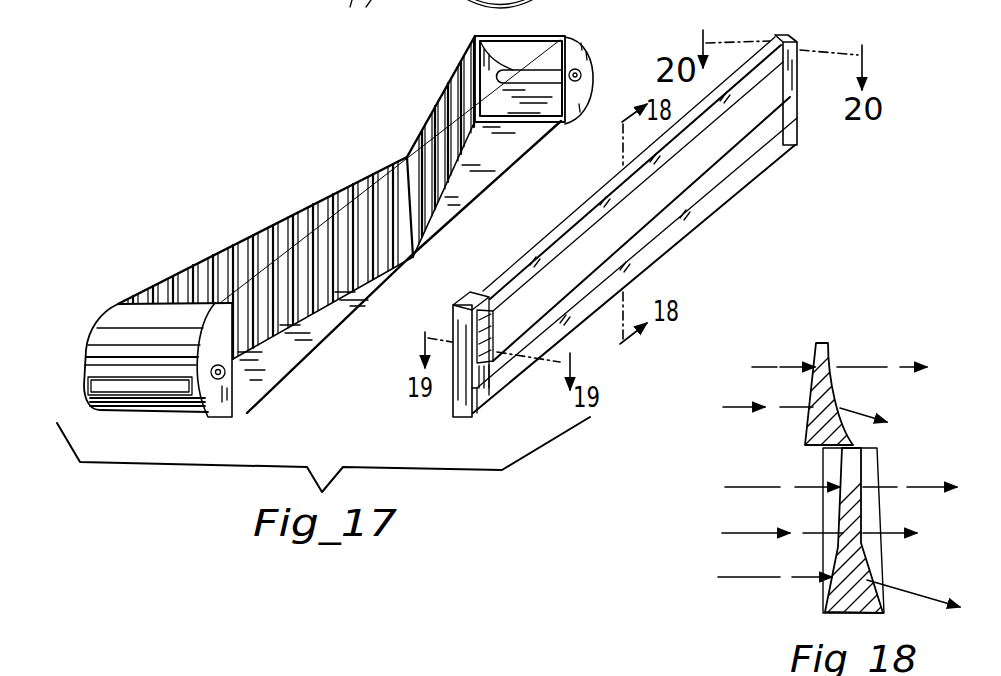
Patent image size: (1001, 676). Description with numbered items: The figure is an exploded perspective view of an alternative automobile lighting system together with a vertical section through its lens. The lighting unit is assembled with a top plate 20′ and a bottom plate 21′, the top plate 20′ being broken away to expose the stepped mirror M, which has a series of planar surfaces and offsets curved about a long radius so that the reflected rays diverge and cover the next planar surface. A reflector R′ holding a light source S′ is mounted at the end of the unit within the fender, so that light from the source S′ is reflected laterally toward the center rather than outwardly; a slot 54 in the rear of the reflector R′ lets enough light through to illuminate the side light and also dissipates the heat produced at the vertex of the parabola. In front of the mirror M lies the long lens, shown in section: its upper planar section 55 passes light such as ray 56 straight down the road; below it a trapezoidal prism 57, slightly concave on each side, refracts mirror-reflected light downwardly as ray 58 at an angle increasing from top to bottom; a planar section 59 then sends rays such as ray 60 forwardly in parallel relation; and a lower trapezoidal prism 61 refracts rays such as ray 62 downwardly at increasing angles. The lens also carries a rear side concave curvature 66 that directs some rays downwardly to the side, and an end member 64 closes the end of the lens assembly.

In FIG. 17, the top plate 20′ is at (520, 46).
In FIG. 17, the bottom plate 21′ is at (468, 199).
In FIG. 17, the stepped mirror M is at (461, 143).
In FIG. 17, the reflector R′ is at (184, 418).
In FIG. 17, the light source S′ is at (228, 372).
In FIG. 17, the slot 54 is at (148, 384).
In FIG. 17, the upper planar section 55 is at (601, 194).
In FIG. 18, the upper planar section 55 is at (828, 343).
In FIG. 18, the light ray 56 is at (857, 366).
In FIG. 17, the trapezoidal section or prism 57 is at (643, 177).
In FIG. 18, the trapezoidal section or prism 57 is at (810, 424).
In FIG. 18, the light ray 58 is at (953, 438).
In FIG. 17, the planar section 59 is at (603, 235).
In FIG. 18, the planar section 59 is at (850, 510).
In FIG. 18, the light ray 60 is at (910, 485).
In FIG. 17, the trapezoidal section or prism 61 is at (640, 235).
In FIG. 18, the trapezoidal section or prism 61 is at (870, 614).
In FIG. 18, the light ray 62 is at (907, 590).
In FIG. 17, the left end post 64 is at (470, 353).
In FIG. 17, the rear side concave curvature 66 is at (797, 131).